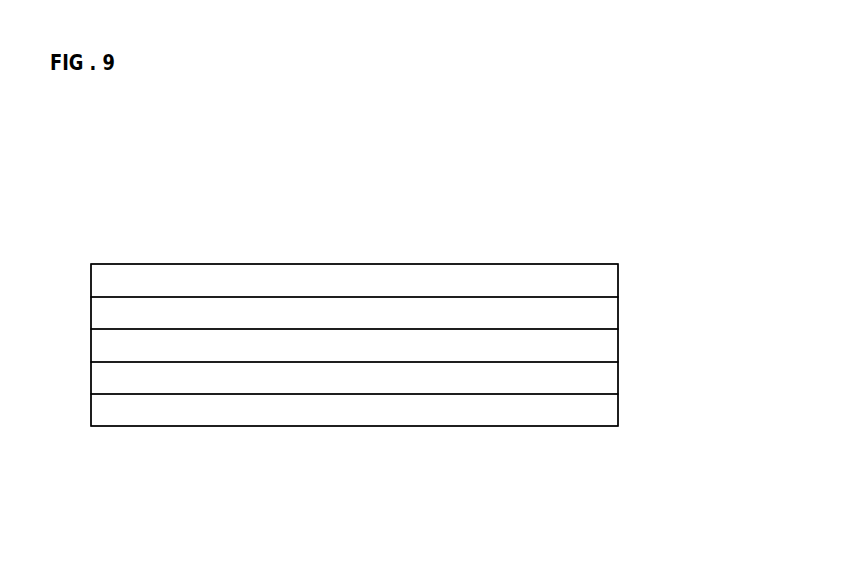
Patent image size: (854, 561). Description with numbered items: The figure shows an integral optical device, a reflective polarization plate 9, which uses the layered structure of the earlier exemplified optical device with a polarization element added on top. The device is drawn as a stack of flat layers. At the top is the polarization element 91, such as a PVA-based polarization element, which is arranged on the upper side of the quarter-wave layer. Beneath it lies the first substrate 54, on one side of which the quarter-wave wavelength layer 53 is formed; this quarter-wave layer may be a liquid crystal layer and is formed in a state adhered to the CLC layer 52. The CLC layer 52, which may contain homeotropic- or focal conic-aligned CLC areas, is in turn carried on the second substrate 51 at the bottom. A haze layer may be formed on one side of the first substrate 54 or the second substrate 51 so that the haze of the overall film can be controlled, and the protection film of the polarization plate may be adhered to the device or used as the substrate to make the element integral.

The reflective polarization plate 9 is at (117, 221).
The polarization element 91 is at (464, 280).
The first substrate 54 is at (597, 311).
The λ/4 wavelength layer 53 is at (590, 347).
The CLC layer 52 is at (599, 380).
The second substrate 51 is at (569, 414).